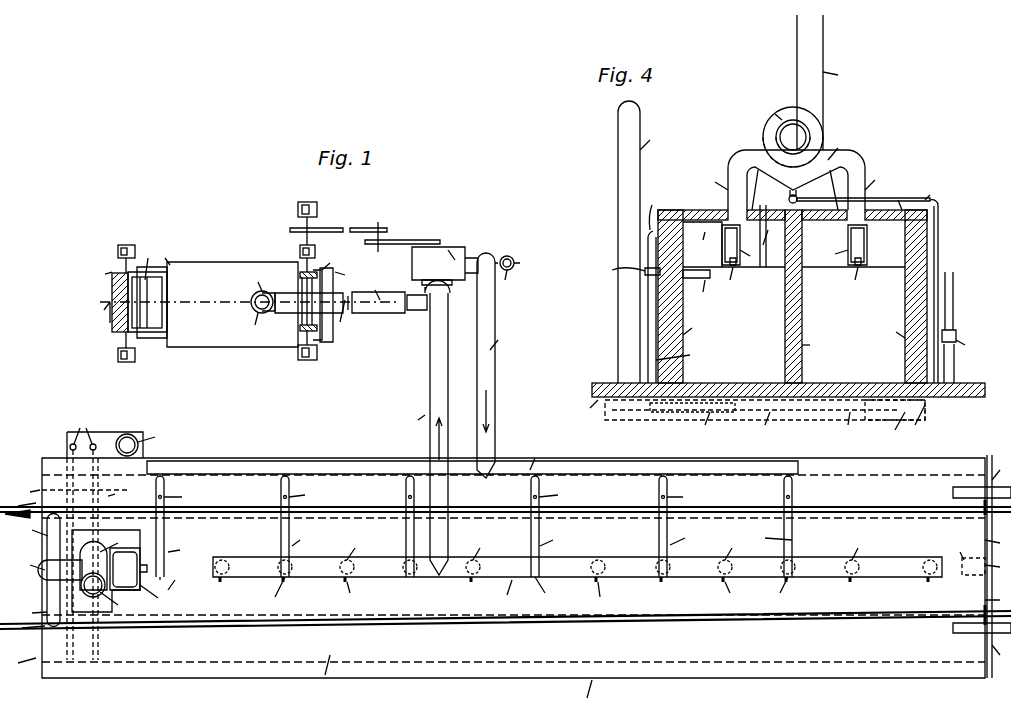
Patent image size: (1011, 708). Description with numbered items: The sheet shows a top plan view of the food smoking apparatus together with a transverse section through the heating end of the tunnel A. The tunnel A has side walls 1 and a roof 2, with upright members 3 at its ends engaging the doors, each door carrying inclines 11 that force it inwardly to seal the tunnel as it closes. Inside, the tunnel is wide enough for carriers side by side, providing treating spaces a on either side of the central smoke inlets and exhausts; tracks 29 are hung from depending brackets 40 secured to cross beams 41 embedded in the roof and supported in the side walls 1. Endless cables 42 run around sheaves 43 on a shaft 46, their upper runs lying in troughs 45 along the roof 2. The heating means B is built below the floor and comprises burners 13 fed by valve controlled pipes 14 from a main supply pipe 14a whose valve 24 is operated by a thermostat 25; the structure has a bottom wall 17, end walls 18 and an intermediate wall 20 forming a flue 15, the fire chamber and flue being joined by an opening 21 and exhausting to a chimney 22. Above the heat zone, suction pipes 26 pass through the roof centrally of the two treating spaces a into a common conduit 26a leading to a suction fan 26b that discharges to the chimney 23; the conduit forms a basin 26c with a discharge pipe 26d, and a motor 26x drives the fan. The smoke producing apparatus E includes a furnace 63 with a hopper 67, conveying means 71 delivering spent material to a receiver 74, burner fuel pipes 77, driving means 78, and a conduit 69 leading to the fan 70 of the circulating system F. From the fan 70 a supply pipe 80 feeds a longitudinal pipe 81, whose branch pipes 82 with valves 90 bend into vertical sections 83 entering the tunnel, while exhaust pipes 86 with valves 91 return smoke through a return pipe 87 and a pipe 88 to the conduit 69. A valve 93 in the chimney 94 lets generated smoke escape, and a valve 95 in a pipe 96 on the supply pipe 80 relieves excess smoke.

In FIG. 1, the side walls 1 is at (303, 659).
In FIG. 4, the side walls 1 is at (788, 303).
In FIG. 1, the roof 2 is at (323, 677).
In FIG. 4, the roof 2 is at (897, 196).
In FIG. 1, the upright members 3 is at (967, 555).
In FIG. 4, the upright members 3 is at (802, 296).
In FIG. 1, the inclines 11 is at (227, 321).
In FIG. 1, the burners 13 is at (73, 492).
In FIG. 4, the burners 13 is at (692, 423).
In FIG. 1, the valve controlled pipes 14 is at (82, 536).
In FIG. 4, the valve controlled pipes 14 is at (676, 310).
In FIG. 4, the main supply pipe 14a is at (660, 213).
In FIG. 4, the flue 15 is at (765, 421).
In FIG. 4, the bottom wall 17 is at (851, 427).
In FIG. 4, the end walls 18 is at (751, 420).
In FIG. 4, the intermediate wall 20 is at (895, 410).
In FIG. 4, the opening 21 is at (892, 431).
In FIG. 1, the exhaust pipe or chimney 22 is at (145, 442).
In FIG. 4, the exhaust pipe or chimney 22 is at (643, 242).
In FIG. 1, the chimney 23 is at (108, 595).
In FIG. 4, the chimney 23 is at (827, 82).
In FIG. 4, the valve 24 is at (626, 270).
In FIG. 4, the thermostat 25 is at (700, 288).
In FIG. 1, the pipes 26 is at (34, 570).
In FIG. 4, the pipes 26 is at (793, 178).
In FIG. 1, the common conduit 26a is at (46, 565).
In FIG. 4, the common conduit 26a is at (796, 169).
In FIG. 1, the suction fan 26b is at (107, 571).
In FIG. 4, the suction fan 26b is at (787, 132).
In FIG. 4, the basin 26c is at (885, 278).
In FIG. 4, the discharge pipe 26d is at (931, 280).
In FIG. 1, the motor 26x is at (143, 577).
In FIG. 4, the track 29 is at (798, 275).
In FIG. 4, the depending brackets 40 is at (794, 245).
In FIG. 4, the cross beams 41 is at (702, 244).
In FIG. 1, the endless cables 42 is at (508, 559).
In FIG. 1, the sheaves 43 is at (998, 568).
In FIG. 1, the troughs 45 is at (505, 569).
In FIG. 1, the shaft 46 is at (998, 567).
In FIG. 1, the furnace or fire chamber 63 is at (218, 327).
In FIG. 1, the hopper 67 is at (147, 288).
In FIG. 1, the conduit 69 is at (387, 302).
In FIG. 1, the fan or blower 70 is at (445, 262).
In FIG. 1, the conveying means 71 is at (216, 282).
In FIG. 1, the receiver 74 is at (319, 304).
In FIG. 1, the valve controlled pipes 77 is at (161, 291).
In FIG. 1, the driving means 78 is at (365, 232).
In FIG. 1, the supply pipe 80 is at (499, 365).
In FIG. 1, the pipe 81 is at (472, 454).
In FIG. 1, the branch pipes 82 is at (474, 526).
In FIG. 1, the vertical sections 83 is at (474, 588).
In FIG. 1, the smoke exhaust pipes 86 is at (576, 555).
In FIG. 1, the return conduit or pipe 87 is at (577, 580).
In FIG. 1, the pipe 88 is at (423, 434).
In FIG. 1, the valve 90 is at (474, 496).
In FIG. 1, the valve 91 is at (574, 590).
In FIG. 1, the valve 93 is at (260, 315).
In FIG. 1, the chimney 94 is at (261, 292).
In FIG. 1, the valve 95 is at (508, 280).
In FIG. 1, the pipe 96 is at (516, 262).
In FIG. 1, the chamber or tunnel A is at (513, 577).
In FIG. 1, the heating means B is at (105, 437).
In FIG. 1, the smoke producing apparatus E is at (250, 295).
In FIG. 1, the circulating system F is at (404, 353).
In FIG. 4, the treating spaces a is at (794, 318).